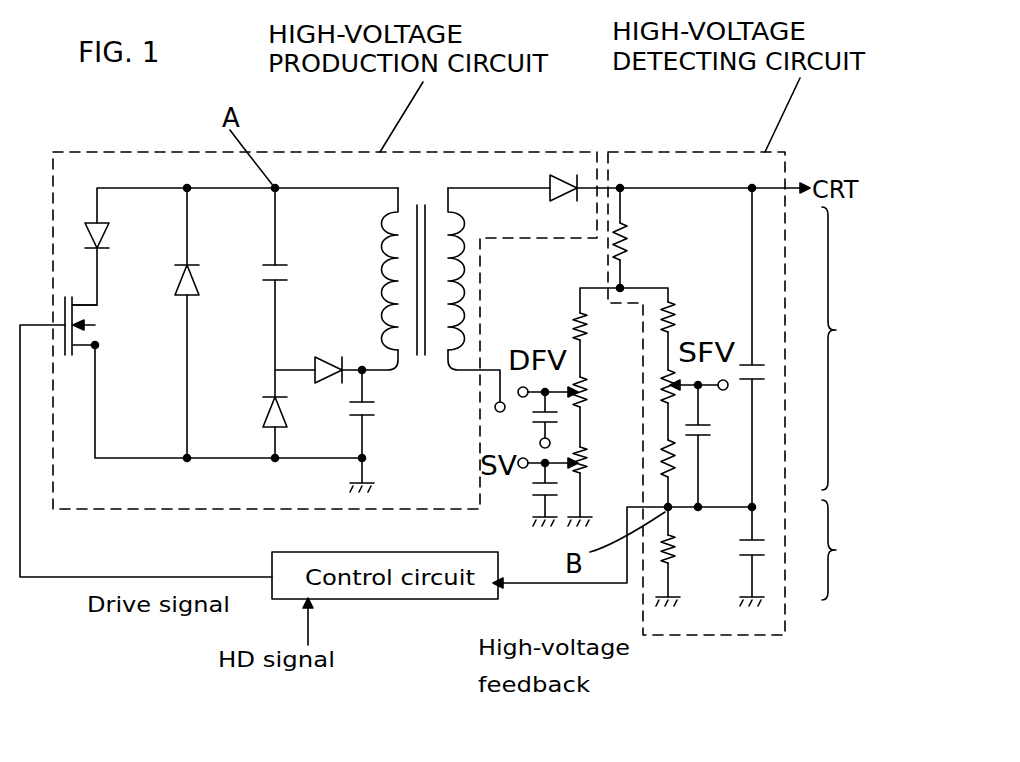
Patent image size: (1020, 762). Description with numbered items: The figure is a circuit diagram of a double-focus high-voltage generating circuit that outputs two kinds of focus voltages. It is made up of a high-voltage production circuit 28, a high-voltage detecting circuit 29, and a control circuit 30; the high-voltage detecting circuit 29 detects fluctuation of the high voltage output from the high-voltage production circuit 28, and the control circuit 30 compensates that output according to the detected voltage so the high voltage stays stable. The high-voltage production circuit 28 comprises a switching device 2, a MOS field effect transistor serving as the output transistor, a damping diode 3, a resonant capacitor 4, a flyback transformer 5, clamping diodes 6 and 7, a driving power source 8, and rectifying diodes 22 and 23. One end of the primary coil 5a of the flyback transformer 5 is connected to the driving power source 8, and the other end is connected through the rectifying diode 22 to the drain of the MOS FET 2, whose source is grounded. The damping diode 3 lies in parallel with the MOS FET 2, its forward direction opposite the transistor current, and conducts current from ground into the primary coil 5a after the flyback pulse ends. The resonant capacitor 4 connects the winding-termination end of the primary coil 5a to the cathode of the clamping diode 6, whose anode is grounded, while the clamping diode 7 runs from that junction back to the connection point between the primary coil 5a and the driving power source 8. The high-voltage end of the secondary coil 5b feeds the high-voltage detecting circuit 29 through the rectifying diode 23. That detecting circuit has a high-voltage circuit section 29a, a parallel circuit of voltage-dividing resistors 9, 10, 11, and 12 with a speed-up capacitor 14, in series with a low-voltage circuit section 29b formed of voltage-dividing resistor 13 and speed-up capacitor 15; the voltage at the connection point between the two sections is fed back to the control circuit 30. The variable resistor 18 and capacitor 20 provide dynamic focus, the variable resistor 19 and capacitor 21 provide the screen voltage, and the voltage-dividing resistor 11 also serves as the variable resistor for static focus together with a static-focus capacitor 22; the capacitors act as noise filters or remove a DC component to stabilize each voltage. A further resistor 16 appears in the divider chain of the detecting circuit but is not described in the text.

The switching device 2 is at (80, 352).
The damping diode 3 is at (183, 300).
The resonant capacitor 4 is at (287, 263).
The flyback transformer 5 is at (425, 234).
The primary coil 5a is at (383, 248).
The secondary coil 5b is at (460, 236).
The clamping diode 6 is at (283, 408).
The clamping diode 7 is at (325, 355).
The driving power source 8 is at (367, 417).
The voltage-dividing resistor 9 is at (630, 240).
The voltage-dividing resistor 10 is at (673, 307).
The voltage-dividing resistor 11 is at (655, 383).
The voltage-dividing resistor 12 is at (657, 460).
The voltage-dividing resistor 13 is at (675, 558).
The speed-up capacitor 14 is at (757, 363).
The speed-up capacitor 15 is at (762, 555).
The resistor 16 is at (572, 322).
The variable resistor for dynamic focus 18 is at (585, 387).
The variable resistor for the screen 19 is at (588, 452).
The capacitor for dynamic focus 20 is at (540, 422).
The capacitor for the screen 21 is at (535, 495).
The rectifying diode 22 is at (107, 233).
The rectifying diode 23 is at (560, 175).
The high-voltage production circuit 28 is at (280, 152).
The high-voltage detecting circuit 29 is at (668, 152).
The high-voltage circuit section 29a is at (860, 331).
The low-voltage circuit section 29b is at (857, 551).
The control circuit 30 is at (392, 599).